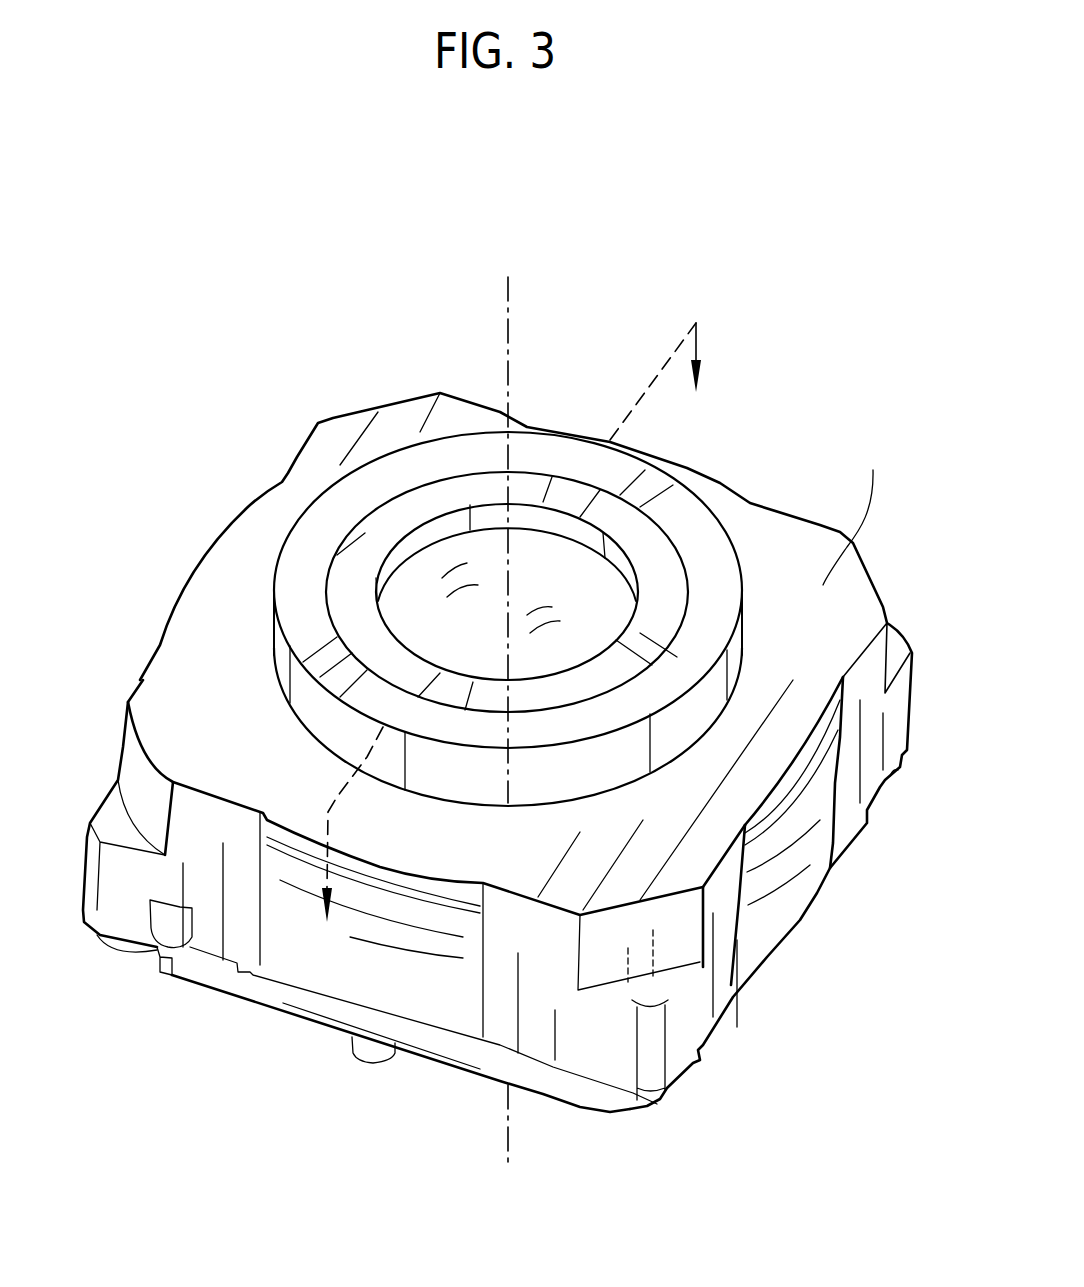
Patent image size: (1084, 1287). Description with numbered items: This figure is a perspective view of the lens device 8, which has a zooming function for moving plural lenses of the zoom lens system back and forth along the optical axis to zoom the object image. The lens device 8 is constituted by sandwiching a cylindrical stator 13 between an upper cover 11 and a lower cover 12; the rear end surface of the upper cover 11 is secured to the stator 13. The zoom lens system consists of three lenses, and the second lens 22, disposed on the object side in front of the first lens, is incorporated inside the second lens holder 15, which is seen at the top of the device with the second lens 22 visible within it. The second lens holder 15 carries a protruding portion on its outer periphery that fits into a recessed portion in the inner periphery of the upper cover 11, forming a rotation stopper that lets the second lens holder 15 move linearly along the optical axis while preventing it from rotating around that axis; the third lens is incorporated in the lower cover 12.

The lens device 8 is at (800, 314).
The upper cover 11 is at (718, 562).
The lower cover 12 is at (445, 1055).
The cylindrical stator 13 is at (270, 950).
The second lens holder 15 is at (365, 535).
The second lens 22 is at (415, 623).